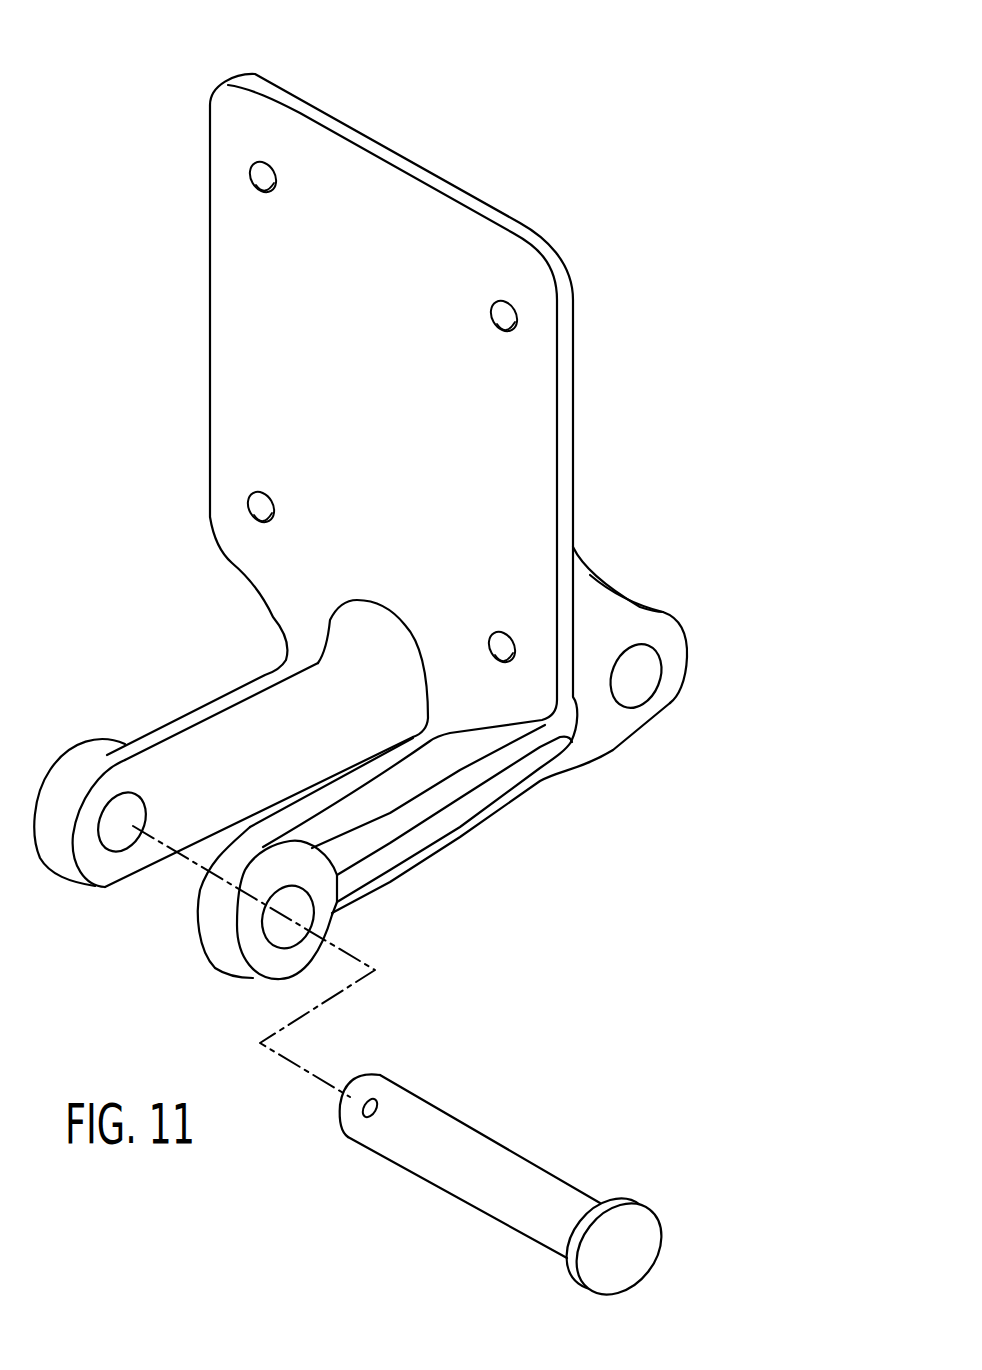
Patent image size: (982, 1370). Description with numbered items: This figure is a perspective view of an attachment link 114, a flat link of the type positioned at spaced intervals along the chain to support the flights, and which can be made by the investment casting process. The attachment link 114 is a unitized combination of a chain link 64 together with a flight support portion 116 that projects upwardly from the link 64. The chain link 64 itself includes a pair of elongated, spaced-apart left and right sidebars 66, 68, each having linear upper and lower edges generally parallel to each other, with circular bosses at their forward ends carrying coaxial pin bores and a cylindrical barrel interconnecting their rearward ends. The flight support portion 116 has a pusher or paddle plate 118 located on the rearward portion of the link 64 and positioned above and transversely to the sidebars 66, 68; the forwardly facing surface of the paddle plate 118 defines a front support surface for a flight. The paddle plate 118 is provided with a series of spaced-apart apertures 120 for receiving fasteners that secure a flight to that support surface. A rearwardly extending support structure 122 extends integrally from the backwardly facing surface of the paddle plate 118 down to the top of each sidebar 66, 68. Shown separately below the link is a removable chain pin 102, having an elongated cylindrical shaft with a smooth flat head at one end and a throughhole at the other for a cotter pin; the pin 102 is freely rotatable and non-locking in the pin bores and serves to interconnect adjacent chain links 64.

The attachment link 114 is at (397, 452).
The flight support portion 116 is at (348, 104).
The paddle plate 118 is at (517, 437).
The apertures 120 is at (268, 190).
The support structure 122 is at (590, 597).
The chain link 64 is at (352, 870).
The left sidebar 66 is at (373, 790).
The right sidebar 68 is at (220, 743).
The chain pin 102 is at (509, 1121).